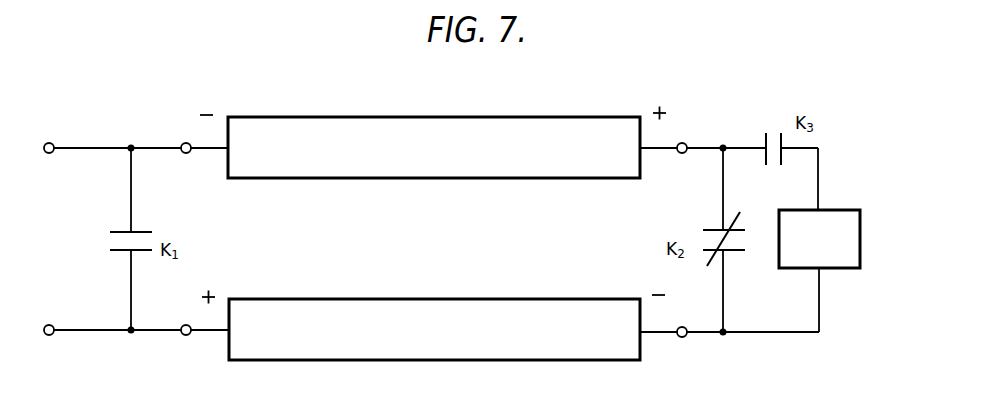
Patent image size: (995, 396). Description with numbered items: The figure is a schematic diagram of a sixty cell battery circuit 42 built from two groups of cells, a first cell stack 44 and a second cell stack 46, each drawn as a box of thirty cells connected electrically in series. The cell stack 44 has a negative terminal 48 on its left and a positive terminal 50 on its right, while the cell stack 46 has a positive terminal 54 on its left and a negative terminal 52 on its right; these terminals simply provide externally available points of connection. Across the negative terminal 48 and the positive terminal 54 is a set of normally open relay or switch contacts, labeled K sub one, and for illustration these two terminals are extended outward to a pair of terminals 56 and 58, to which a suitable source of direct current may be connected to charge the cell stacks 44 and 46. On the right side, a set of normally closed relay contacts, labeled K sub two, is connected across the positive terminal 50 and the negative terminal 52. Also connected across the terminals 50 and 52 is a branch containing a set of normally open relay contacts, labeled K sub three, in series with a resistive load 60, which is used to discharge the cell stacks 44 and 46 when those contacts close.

The sixty cell battery circuit 42 is at (562, 104).
The cell stack 44 is at (289, 116).
The cell stack 46 is at (280, 298).
The negative terminal 48 is at (185, 154).
The positive terminal 50 is at (686, 144).
The negative terminal 52 is at (686, 336).
The positive terminal 54 is at (184, 335).
The terminal 56 is at (47, 142).
The terminal 58 is at (46, 324).
The resistive load 60 is at (843, 269).